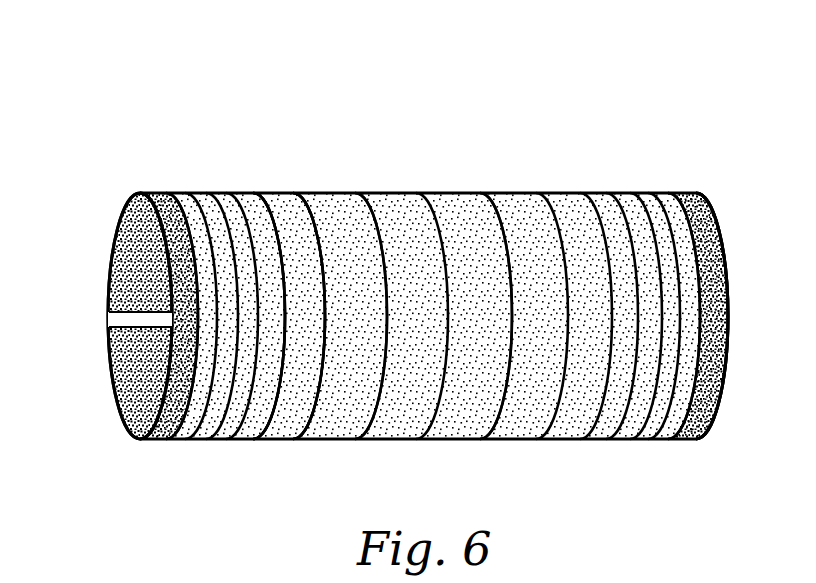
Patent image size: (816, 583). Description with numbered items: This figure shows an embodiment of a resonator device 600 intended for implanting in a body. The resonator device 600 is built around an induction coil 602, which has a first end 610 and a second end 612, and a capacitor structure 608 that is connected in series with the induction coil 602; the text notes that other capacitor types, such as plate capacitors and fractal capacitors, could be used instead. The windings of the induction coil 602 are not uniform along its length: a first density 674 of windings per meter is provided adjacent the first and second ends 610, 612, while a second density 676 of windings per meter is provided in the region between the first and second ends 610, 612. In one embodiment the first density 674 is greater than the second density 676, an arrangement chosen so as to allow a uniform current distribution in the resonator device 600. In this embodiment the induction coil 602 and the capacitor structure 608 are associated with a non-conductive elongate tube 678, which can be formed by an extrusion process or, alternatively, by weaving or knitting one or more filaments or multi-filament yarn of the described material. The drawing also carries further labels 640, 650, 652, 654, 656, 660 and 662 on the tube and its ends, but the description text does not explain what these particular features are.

The resonator device 600 is at (136, 72).
The induction coil 602 is at (370, 206).
The capacitor structure 608 is at (154, 452).
The first end 610 is at (160, 185).
The second end 612 is at (693, 455).
The annular groove 640 is at (293, 440).
The peripheral edge 650 is at (115, 238).
The outer surface 652 is at (295, 182).
The end face 654 is at (121, 172).
The second end band 656 is at (684, 180).
The slot edge 660 is at (108, 312).
The slot 662 is at (96, 323).
The first density of windings per meter 674 is at (257, 453).
The second density of windings per meter 676 is at (517, 452).
The non-conductive elongate tube 678 is at (500, 194).